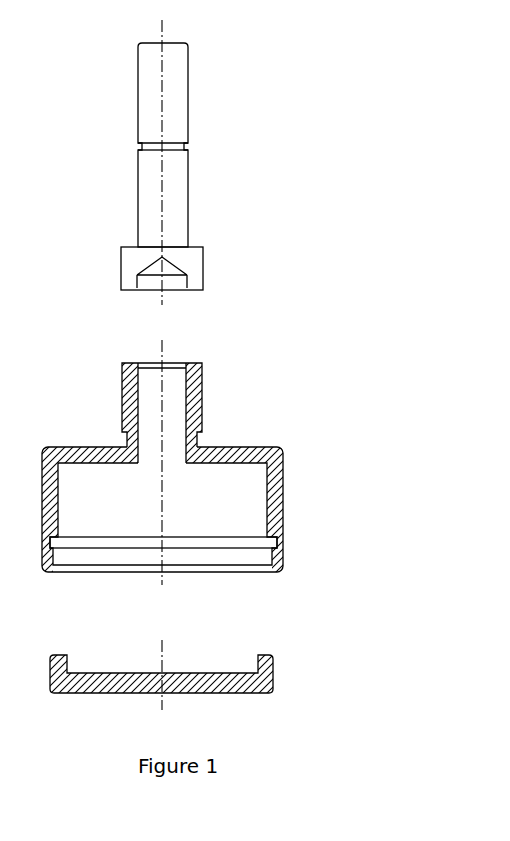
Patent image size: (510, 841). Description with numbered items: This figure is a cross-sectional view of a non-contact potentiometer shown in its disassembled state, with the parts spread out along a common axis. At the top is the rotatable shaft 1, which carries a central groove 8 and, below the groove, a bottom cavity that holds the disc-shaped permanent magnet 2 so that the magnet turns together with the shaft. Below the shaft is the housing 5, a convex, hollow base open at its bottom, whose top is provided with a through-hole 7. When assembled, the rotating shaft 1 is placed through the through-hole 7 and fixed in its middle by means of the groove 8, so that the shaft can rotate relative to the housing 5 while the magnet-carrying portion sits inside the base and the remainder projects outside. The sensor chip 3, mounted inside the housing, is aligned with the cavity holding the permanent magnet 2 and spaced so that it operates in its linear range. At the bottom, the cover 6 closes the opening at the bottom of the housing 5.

The rotatable shaft 1 is at (188, 90).
The permanent magnet 2 is at (187, 275).
The sensor chip 3 is at (248, 540).
The housing 5 is at (267, 447).
The cover 6 is at (272, 672).
The through-hole 7 is at (167, 363).
The groove 8 is at (140, 145).